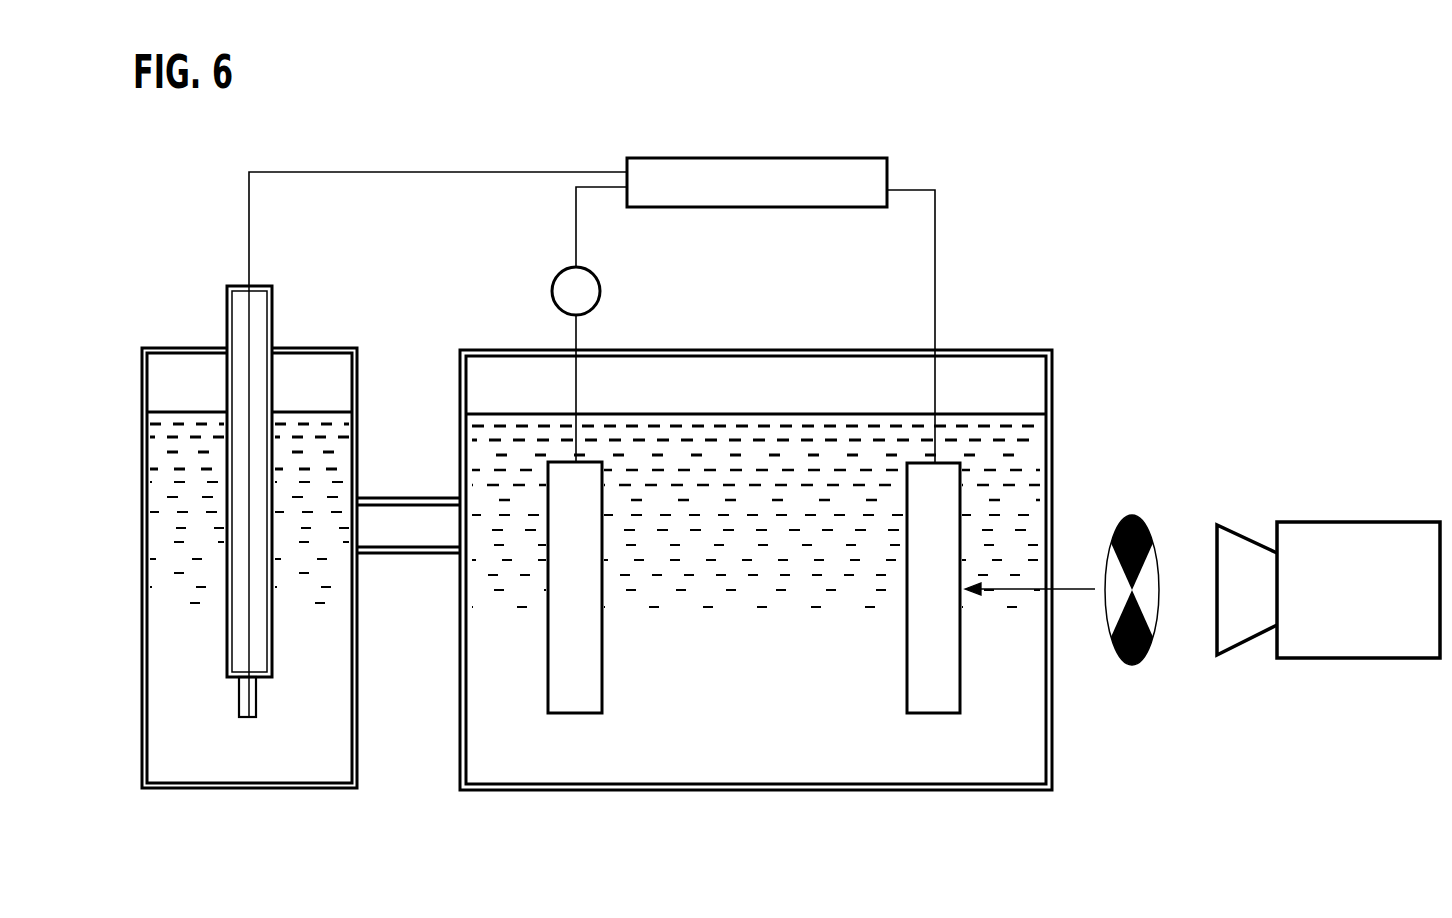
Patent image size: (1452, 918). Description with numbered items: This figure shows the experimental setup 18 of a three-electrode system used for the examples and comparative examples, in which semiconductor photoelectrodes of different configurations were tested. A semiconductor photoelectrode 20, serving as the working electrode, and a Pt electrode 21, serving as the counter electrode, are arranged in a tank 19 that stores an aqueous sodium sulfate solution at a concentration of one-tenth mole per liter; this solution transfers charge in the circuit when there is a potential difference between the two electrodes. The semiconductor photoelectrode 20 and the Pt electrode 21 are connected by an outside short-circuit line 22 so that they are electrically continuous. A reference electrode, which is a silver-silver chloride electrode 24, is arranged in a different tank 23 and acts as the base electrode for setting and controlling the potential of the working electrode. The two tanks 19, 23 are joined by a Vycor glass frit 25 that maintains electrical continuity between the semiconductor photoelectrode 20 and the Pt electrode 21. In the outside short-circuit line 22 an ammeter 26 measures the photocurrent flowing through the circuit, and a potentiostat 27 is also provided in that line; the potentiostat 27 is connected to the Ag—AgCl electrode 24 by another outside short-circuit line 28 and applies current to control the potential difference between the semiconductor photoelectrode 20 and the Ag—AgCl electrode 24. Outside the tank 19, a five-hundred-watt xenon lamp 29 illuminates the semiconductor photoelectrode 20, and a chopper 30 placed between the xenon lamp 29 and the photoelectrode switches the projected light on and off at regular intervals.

The experimental setup 18 is at (996, 153).
The tank 19 is at (1053, 372).
The semiconductor photoelectrode 20 is at (907, 641).
The Pt electrode 21 is at (602, 638).
The outside short-circuit line 22 is at (935, 272).
The tank 23 is at (357, 368).
The Ag—AgCl electrode 24 is at (227, 322).
The Vycor glass frit 25 is at (405, 515).
The ammeter 26 is at (601, 290).
The potentiostat 27 is at (755, 158).
The outside short-circuit line 28 is at (455, 171).
The xenon lamp 29 is at (1355, 522).
The chopper 30 is at (1132, 515).